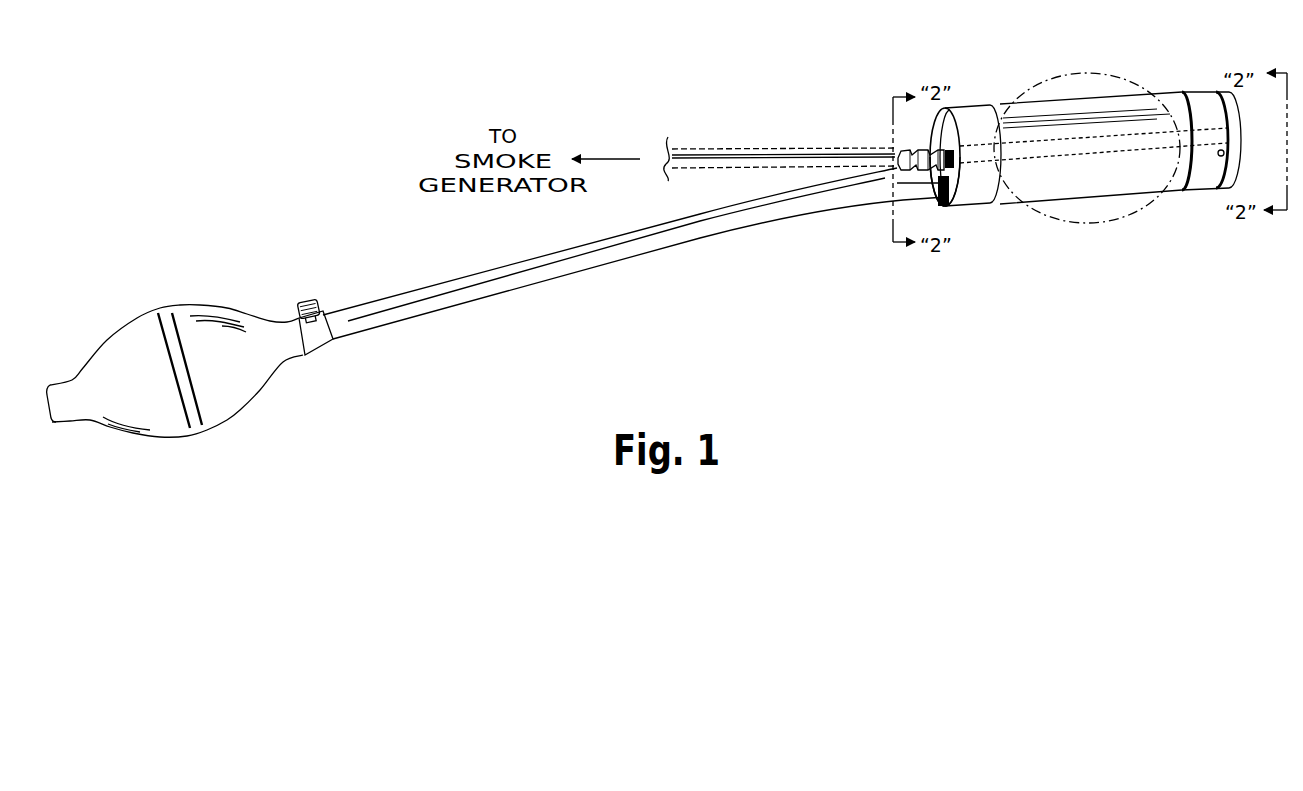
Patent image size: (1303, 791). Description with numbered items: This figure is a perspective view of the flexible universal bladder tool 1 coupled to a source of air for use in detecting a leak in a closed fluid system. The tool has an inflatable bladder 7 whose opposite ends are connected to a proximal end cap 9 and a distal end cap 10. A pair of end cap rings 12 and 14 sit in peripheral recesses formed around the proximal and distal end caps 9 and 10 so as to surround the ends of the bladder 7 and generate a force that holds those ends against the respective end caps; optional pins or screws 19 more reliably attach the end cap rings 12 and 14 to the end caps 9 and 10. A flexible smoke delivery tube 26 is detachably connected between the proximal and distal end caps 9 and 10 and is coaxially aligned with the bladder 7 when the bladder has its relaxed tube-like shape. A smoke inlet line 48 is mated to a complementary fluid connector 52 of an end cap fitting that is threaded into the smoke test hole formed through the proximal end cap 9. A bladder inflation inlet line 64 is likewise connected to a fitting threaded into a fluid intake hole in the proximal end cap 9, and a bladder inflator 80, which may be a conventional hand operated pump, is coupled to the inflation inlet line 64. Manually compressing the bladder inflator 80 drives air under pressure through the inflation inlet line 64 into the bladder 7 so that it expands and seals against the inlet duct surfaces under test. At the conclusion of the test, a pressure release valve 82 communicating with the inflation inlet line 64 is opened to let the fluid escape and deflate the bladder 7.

The flexible universal bladder tool 1 is at (1050, 54).
The inflatable bladder 7 is at (1120, 98).
The proximal end cap 9 is at (952, 208).
The distal end cap 10 is at (1232, 135).
The end cap ring 12 is at (977, 106).
The end cap ring 14 is at (1176, 94).
The pins or screws 19 is at (968, 170).
The flexible smoke delivery tube 26 is at (1098, 162).
The smoke inlet line 48 is at (777, 150).
The fluid connector 52 is at (900, 162).
The bladder inflation inlet line 64 is at (530, 289).
The bladder inflator 80 is at (183, 307).
The pressure release valve 82 is at (307, 298).